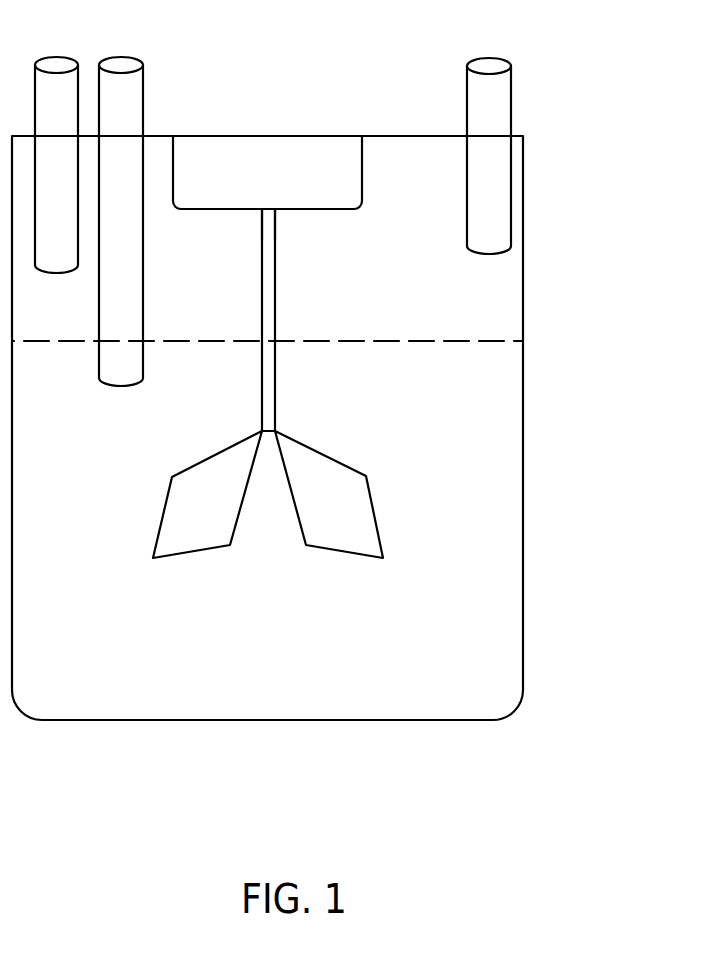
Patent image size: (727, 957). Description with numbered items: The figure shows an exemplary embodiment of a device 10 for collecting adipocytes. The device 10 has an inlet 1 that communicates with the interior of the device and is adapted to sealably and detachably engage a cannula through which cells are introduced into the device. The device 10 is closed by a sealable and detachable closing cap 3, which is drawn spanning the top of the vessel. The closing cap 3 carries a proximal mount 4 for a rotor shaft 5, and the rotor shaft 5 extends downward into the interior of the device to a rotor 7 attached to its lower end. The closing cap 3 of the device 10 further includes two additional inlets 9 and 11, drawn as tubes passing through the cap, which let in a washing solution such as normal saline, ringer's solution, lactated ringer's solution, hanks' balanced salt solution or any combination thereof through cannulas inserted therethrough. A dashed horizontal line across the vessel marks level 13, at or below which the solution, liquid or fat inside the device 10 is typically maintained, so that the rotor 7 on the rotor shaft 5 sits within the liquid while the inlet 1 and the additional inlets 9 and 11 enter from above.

The inlet 1 is at (504, 152).
The closing cap 3 is at (267, 153).
The proximal mount 4 is at (246, 233).
The rotor shaft 5 is at (281, 320).
The rotor 7 is at (285, 494).
The additional inlet 9 is at (56, 146).
The device 10 is at (593, 134).
The additional inlet 11 is at (121, 203).
The level 13 is at (294, 338).